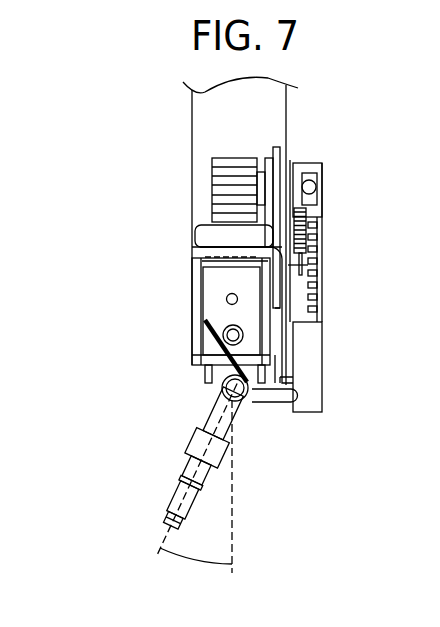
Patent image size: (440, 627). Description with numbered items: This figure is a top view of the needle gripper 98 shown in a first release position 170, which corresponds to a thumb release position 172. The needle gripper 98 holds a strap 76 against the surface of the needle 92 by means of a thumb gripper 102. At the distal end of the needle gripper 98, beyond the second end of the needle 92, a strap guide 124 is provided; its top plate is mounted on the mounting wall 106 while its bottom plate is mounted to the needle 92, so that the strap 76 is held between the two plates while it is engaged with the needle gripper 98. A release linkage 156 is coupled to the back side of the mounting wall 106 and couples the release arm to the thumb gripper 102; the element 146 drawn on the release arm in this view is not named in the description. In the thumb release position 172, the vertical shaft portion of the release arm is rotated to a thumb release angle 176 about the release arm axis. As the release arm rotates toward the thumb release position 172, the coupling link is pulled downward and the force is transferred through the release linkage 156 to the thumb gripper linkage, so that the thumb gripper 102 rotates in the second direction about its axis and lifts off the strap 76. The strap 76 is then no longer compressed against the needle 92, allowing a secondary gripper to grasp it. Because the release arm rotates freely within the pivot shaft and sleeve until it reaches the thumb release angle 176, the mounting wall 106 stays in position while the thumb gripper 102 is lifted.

The needle 92 is at (250, 124).
The mounting wall 106 is at (283, 130).
The needle gripper 98 is at (366, 183).
The thumb gripper 102 is at (212, 172).
The strap 76 is at (209, 218).
The strap guide 124 is at (179, 256).
The release linkage 156 is at (336, 362).
The lever 146 is at (185, 463).
The thumb release position 172 is at (93, 425).
The first release position 170 is at (323, 488).
The thumb release angle 176 is at (195, 563).